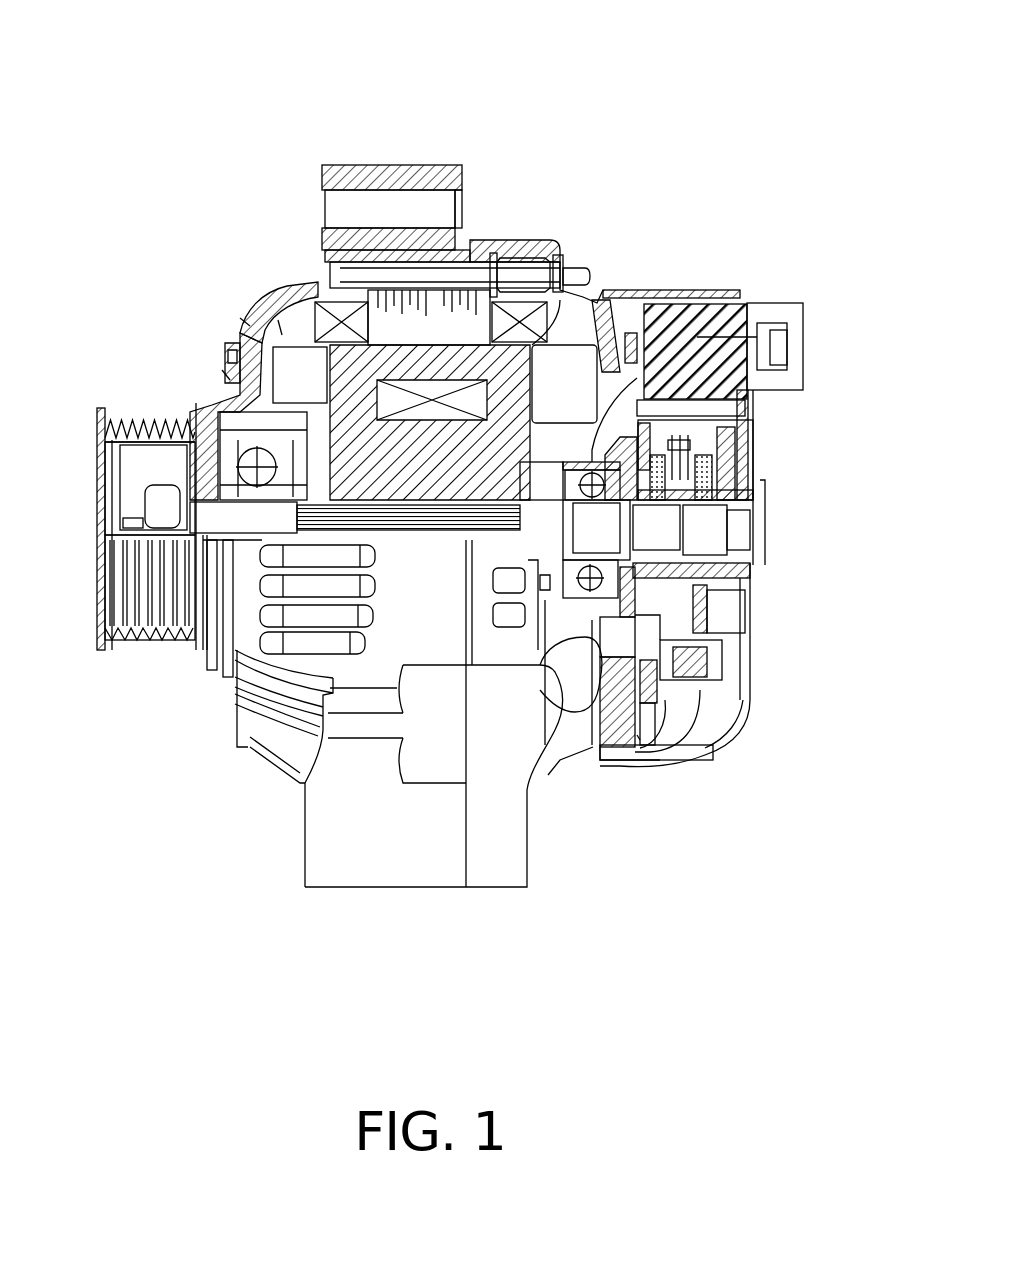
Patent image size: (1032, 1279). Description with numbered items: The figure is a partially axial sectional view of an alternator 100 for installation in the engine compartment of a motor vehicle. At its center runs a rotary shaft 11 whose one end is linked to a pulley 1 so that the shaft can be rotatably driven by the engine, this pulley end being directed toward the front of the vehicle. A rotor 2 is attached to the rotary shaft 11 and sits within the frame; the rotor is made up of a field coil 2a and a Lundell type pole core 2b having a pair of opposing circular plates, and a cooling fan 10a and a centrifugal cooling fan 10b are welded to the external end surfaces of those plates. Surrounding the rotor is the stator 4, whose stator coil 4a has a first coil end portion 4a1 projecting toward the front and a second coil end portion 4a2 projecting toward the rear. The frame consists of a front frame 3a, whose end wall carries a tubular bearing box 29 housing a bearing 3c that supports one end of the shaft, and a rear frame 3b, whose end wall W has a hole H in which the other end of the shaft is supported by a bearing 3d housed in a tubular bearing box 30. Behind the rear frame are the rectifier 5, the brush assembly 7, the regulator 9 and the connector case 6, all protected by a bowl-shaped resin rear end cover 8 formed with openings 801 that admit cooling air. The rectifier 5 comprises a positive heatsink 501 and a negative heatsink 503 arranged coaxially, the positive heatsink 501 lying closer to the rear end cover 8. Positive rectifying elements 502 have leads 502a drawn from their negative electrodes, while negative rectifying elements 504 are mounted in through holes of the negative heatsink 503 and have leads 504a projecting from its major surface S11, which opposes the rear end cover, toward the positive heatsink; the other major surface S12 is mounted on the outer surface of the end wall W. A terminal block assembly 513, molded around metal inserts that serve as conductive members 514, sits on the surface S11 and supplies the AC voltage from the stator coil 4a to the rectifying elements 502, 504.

The alternator 100 is at (693, 97).
The pulley 1 is at (133, 420).
The rotary shaft 11 is at (200, 513).
The rotor 2 is at (427, 342).
The field coil 2a is at (410, 388).
The pole core 2b is at (258, 333).
The tubular bearing box 29 is at (224, 372).
The cooling fan 10a is at (243, 318).
The centrifugal cooling fan 10b is at (562, 370).
The front frame 3a is at (468, 252).
The rear frame 3b is at (537, 255).
The bearing 3c is at (245, 440).
The bearing 3d is at (600, 565).
The stator 4 is at (320, 280).
The stator coil 4a is at (278, 320).
The first coil end portion 4a1 is at (566, 260).
The second coil end portion 4a2 is at (313, 290).
The tubular bearing box 30 is at (698, 310).
The connector case 6 is at (780, 305).
The regulator 9 is at (710, 408).
The brush assembly 7 is at (727, 453).
The rear end cover 8 is at (752, 475).
The rectifier 5 is at (712, 608).
The positive heatsink 501 is at (722, 667).
The positive rectifying element 502 is at (707, 622).
The lead 502a is at (653, 612).
The negative heatsink 503 is at (657, 720).
The negative rectifying element 504 is at (660, 725).
The lead 504a is at (735, 715).
The terminal block assembly 513 is at (707, 662).
The conductive member 514 is at (733, 692).
The opening 801 is at (746, 632).
The hole H is at (556, 606).
The end wall W is at (605, 700).
The major surface S11 is at (655, 700).
The major surface S12 is at (637, 735).